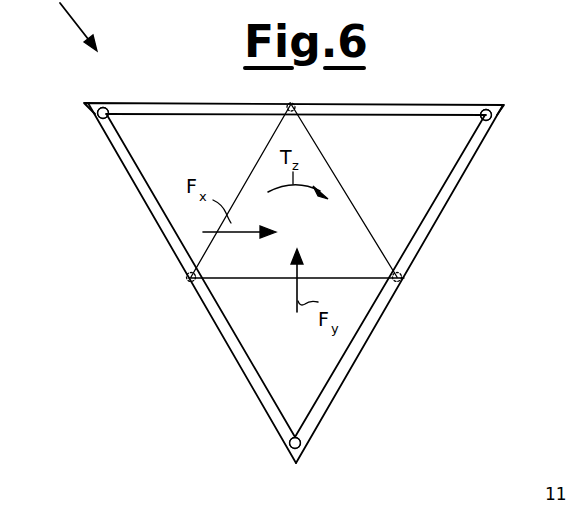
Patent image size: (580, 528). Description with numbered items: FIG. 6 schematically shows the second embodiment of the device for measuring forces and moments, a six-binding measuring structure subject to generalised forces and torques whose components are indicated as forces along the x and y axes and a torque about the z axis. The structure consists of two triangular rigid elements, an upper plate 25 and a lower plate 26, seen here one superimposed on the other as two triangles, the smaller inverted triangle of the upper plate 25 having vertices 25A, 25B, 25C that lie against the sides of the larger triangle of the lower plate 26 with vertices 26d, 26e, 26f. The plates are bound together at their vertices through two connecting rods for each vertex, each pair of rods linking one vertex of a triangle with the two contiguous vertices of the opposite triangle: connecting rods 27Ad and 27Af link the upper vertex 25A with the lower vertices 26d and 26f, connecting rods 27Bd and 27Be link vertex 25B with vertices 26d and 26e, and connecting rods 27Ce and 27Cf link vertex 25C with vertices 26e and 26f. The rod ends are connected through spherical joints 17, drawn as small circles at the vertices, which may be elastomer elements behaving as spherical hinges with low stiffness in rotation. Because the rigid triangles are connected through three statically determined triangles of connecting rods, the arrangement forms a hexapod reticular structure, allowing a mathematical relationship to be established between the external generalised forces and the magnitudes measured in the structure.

The spherical joint 17 is at (108, 107).
The upper plate 25 is at (310, 227).
The vertex of upper triangle 25A is at (403, 281).
The vertex of upper triangle 25B is at (188, 280).
The vertex of upper triangle 25C is at (297, 105).
The lower plate 26 is at (462, 174).
The vertex of lower triangle 26d is at (292, 458).
The vertex of lower triangle 26e is at (85, 103).
The vertex of lower triangle 26f is at (498, 106).
The connecting rod 27Ad is at (351, 347).
The connecting rod 27Af is at (428, 218).
The connecting rod 27Bd is at (243, 372).
The connecting rod 27Be is at (136, 186).
The connecting rod 27Ce is at (183, 114).
The connecting rod 27Cf is at (408, 115).